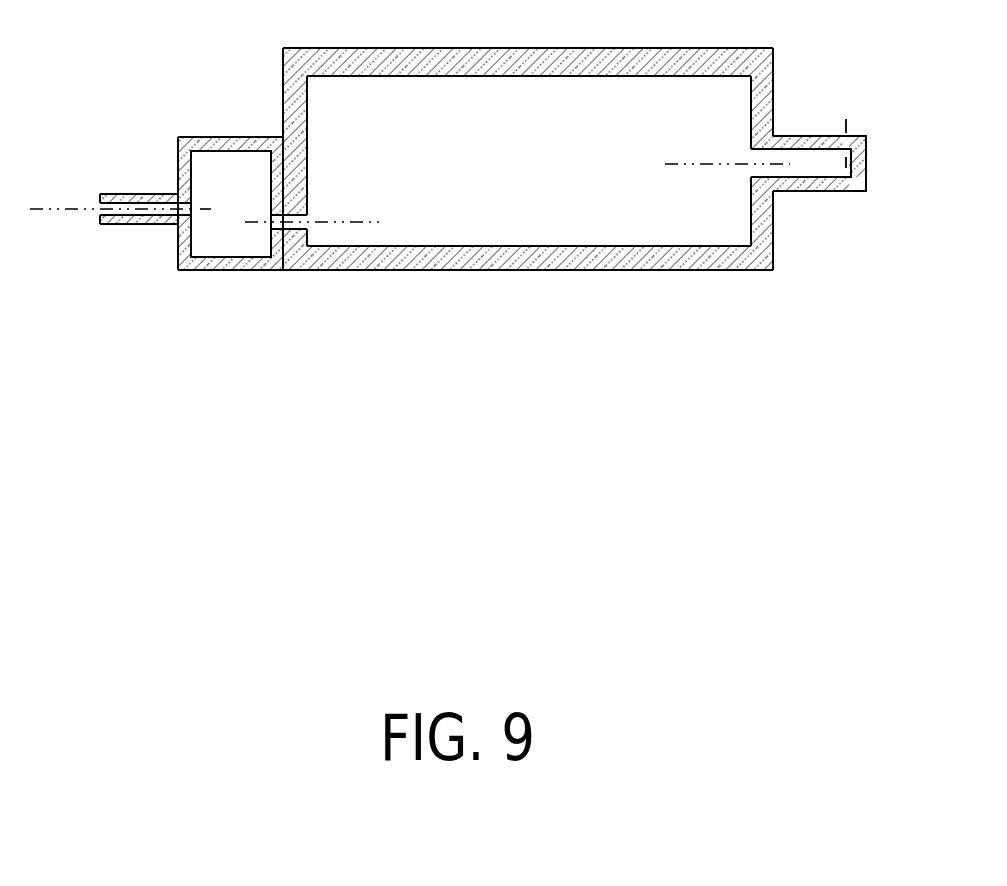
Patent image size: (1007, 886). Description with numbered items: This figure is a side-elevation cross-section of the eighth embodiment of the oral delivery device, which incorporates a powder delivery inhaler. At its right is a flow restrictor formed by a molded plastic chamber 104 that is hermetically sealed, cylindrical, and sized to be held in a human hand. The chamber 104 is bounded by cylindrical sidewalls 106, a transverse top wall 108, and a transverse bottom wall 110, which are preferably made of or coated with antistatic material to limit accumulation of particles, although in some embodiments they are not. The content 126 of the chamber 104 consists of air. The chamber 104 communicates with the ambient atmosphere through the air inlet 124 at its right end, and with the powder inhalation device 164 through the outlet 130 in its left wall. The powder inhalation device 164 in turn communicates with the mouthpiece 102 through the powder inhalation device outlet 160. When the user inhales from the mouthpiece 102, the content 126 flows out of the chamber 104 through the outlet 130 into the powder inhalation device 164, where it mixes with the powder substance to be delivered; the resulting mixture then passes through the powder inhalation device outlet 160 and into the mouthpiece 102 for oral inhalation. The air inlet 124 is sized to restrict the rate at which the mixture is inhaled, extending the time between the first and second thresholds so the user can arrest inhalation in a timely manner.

The mouthpiece 102 is at (140, 224).
The chamber 104 is at (772, 212).
The cylindrical sidewalls 106 is at (765, 88).
The transverse top wall 108 is at (514, 56).
The transverse bottom wall 110 is at (582, 270).
The air inlet 124 is at (851, 136).
The content 126 is at (537, 164).
The outlet 130 is at (307, 215).
The powder inhalation device outlet 160 is at (190, 203).
The powder inhalation device 164 is at (227, 257).